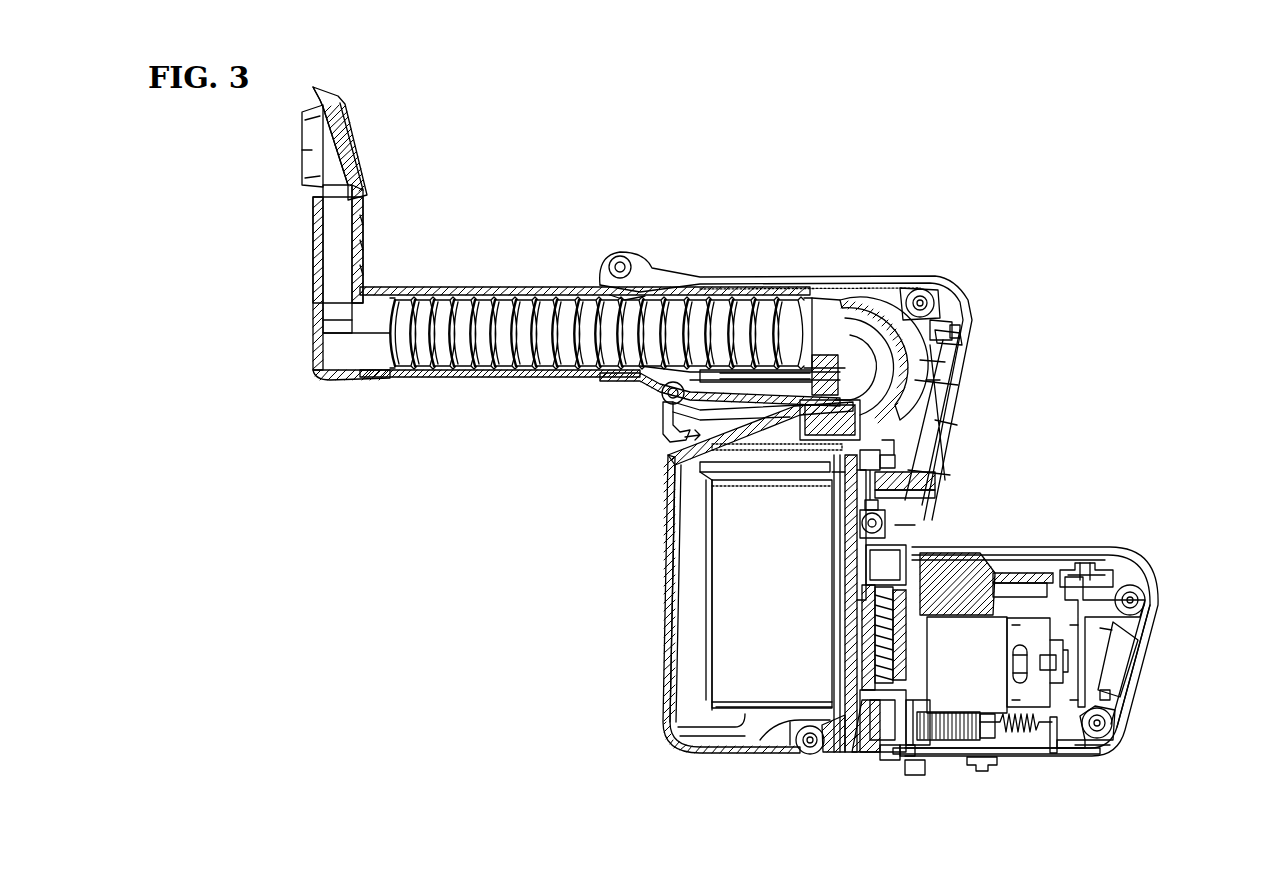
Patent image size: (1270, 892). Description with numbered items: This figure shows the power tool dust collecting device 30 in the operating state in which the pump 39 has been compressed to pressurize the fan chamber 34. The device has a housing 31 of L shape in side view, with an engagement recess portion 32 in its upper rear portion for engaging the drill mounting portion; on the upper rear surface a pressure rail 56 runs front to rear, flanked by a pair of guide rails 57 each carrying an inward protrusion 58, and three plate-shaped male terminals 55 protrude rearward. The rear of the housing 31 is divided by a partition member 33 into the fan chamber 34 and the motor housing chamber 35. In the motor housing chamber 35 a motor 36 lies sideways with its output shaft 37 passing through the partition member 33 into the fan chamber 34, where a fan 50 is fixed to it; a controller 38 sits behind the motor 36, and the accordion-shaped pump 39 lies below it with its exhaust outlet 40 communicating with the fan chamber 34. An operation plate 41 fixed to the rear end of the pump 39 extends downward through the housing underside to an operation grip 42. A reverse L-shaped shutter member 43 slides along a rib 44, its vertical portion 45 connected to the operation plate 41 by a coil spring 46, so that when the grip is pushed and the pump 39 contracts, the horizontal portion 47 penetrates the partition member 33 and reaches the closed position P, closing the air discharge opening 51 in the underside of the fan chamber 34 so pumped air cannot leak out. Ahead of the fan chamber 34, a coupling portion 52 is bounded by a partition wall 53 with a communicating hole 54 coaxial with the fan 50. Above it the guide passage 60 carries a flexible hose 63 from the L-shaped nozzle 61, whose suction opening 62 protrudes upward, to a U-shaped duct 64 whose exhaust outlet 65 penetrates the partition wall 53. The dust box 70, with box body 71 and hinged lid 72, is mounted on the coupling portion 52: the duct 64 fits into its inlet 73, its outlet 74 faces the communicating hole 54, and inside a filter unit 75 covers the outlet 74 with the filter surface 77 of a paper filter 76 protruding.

The dust collecting device 30 is at (1062, 118).
The housing 31 is at (927, 290).
The engagement recess portion 32 is at (950, 372).
The partition member 33 is at (850, 753).
The fan chamber 34 is at (897, 730).
The motor housing chamber 35 is at (1062, 737).
The motor 36 is at (1105, 612).
The output shaft 37 is at (1040, 628).
The controller 38 is at (1150, 700).
The pump 39 is at (1075, 670).
The exhaust outlet 40 is at (1050, 655).
The operation plate 41 is at (1007, 733).
The operation grip 42 is at (983, 760).
The shutter member 43 is at (1032, 760).
The rib 44 is at (1063, 743).
The vertical portion 45 is at (1085, 745).
The coil spring 46 is at (1110, 735).
The horizontal portion 47 is at (907, 760).
The fan 50 is at (890, 743).
The air discharge opening 51 is at (900, 760).
The coupling portion 52 is at (672, 438).
The partition wall 53 is at (807, 750).
The communicating hole 54 is at (775, 735).
The male terminals 55 is at (937, 480).
The pressure rail 56 is at (967, 548).
The guide rails 57 is at (1115, 548).
The protrusion 58 is at (1063, 548).
The guide passage 60 is at (703, 288).
The nozzle 61 is at (343, 217).
The suction opening 62 is at (335, 134).
The flexible hose 63 is at (519, 290).
The duct 64 is at (860, 320).
The exhaust outlet 65 is at (820, 367).
The dust box 70 is at (682, 770).
The box body 71 is at (665, 490).
The lid 72 is at (892, 458).
The inlet 73 is at (883, 460).
The outlet 74 is at (835, 655).
The filter unit 75 is at (705, 552).
The paper filter 76 is at (735, 590).
The filter surface 77 is at (712, 636).
The closed position P is at (915, 770).